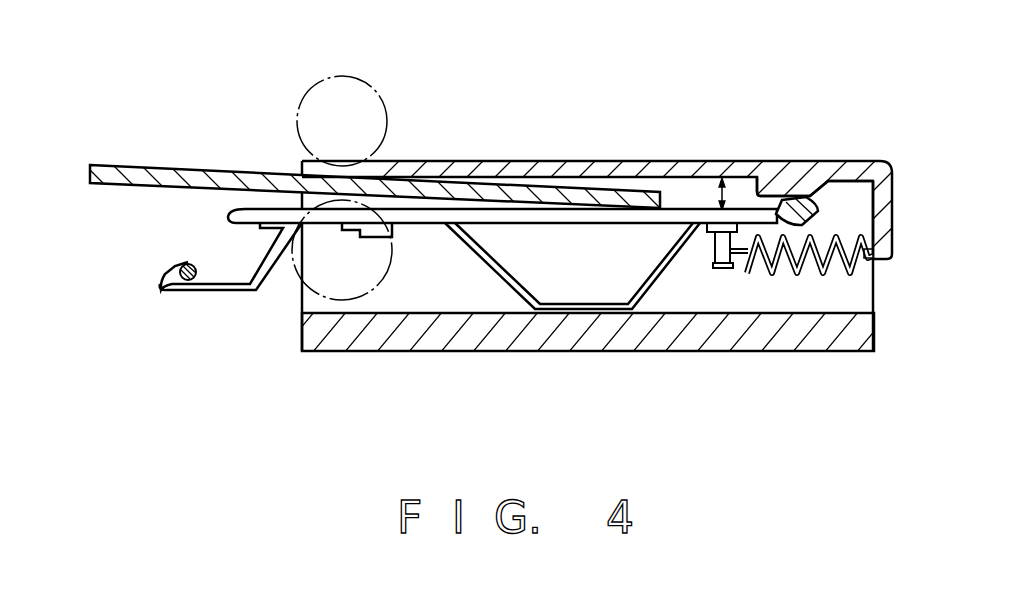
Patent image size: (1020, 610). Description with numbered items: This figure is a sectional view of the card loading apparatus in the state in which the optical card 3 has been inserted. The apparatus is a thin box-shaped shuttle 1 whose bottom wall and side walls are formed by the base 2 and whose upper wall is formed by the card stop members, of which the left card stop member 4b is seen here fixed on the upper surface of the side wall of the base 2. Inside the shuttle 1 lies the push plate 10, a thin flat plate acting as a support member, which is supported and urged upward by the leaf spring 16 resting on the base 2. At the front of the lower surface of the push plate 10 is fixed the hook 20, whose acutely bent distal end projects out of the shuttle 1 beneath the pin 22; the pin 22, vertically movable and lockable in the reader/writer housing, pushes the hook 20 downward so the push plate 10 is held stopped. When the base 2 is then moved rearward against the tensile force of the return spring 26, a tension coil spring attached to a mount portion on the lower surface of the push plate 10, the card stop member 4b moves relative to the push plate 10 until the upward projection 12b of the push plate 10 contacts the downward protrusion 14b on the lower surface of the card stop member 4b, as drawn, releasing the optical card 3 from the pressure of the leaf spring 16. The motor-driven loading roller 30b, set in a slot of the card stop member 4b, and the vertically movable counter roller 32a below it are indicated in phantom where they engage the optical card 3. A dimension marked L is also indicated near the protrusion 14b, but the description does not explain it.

The shuttle 1 is at (528, 116).
The base 2 is at (787, 343).
The optical card 3 is at (167, 166).
The left card stop member 4b is at (583, 161).
The push plate 10 is at (686, 208).
The upward projection 12b is at (832, 182).
The downward protrusion 14b is at (793, 180).
The leaf spring 16 is at (662, 278).
The hook 20 is at (165, 292).
The pin 22 is at (190, 263).
The return spring 26 is at (830, 278).
The loading roller 30b is at (387, 108).
The counter roller 32a is at (296, 300).
The gap dimension L is at (724, 190).